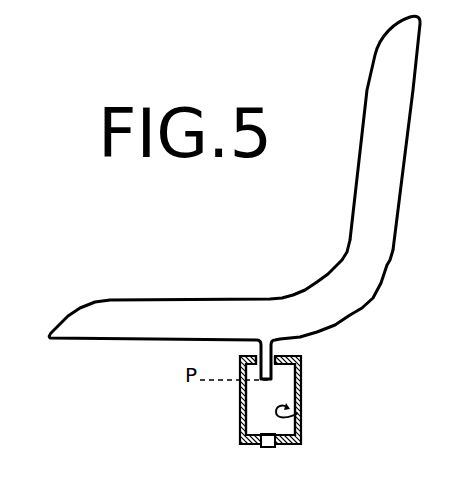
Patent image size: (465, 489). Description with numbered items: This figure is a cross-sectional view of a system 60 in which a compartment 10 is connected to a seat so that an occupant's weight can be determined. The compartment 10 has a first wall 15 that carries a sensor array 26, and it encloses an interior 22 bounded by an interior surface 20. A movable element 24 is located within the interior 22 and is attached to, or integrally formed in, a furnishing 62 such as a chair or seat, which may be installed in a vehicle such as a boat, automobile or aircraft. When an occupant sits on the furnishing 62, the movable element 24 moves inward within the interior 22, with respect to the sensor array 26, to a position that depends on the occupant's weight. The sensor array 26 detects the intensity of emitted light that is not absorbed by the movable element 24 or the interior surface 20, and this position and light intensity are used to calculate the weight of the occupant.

The system 60 is at (127, 262).
The furnishing 62 is at (378, 61).
The compartment 10 is at (260, 404).
The first wall 15 is at (242, 446).
The interior surface 20 is at (298, 413).
The interior 22 is at (278, 396).
The movable element 24 is at (280, 368).
The sensor array 26 is at (275, 447).